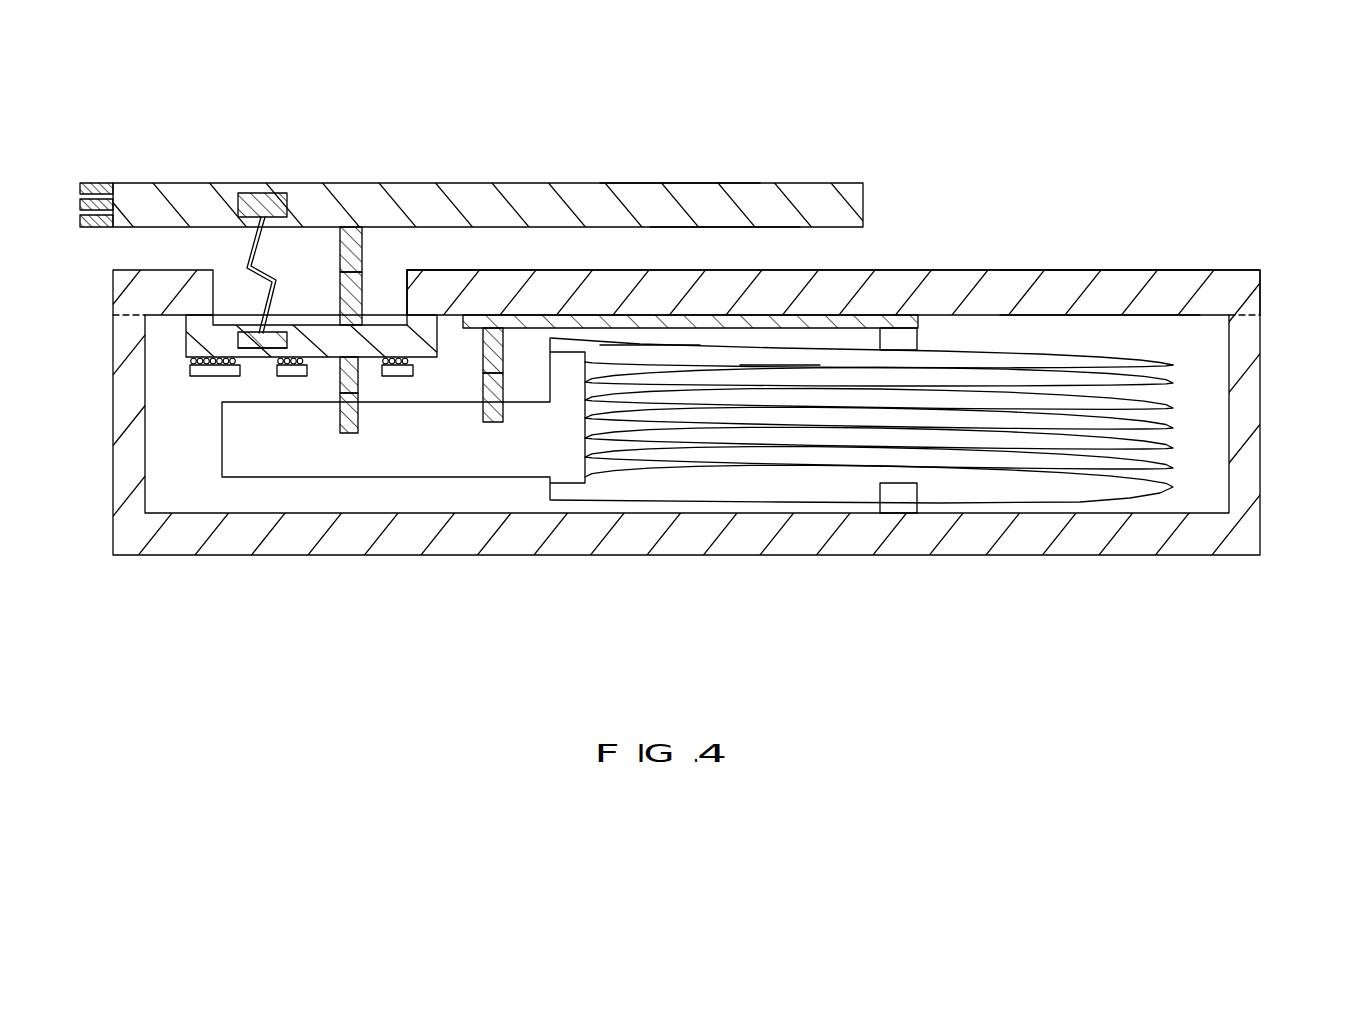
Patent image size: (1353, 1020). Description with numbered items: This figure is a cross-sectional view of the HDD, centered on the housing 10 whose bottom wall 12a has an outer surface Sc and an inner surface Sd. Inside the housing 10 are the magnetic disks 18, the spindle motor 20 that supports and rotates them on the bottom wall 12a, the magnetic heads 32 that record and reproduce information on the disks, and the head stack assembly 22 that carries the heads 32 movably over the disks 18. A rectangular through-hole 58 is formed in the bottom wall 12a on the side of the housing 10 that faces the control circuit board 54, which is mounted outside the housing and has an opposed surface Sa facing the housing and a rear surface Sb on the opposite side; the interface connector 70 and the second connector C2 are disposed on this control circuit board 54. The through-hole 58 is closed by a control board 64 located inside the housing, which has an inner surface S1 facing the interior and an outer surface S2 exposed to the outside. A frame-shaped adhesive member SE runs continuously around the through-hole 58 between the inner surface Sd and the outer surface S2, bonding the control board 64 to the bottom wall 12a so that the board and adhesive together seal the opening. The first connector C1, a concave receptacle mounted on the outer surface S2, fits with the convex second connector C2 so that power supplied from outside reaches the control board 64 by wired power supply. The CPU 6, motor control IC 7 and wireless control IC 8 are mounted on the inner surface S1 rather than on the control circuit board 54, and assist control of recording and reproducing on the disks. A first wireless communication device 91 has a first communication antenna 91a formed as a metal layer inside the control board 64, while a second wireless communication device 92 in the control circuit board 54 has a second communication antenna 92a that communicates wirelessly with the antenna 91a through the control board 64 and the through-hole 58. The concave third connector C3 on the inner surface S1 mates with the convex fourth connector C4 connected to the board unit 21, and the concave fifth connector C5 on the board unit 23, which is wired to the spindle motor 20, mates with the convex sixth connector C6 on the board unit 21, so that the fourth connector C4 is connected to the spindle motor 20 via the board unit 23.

The housing 10 is at (1276, 497).
The bottom wall 12a is at (1258, 292).
The magnetic disks 18 is at (1174, 384).
The spindle motor 20 is at (920, 335).
The board unit (first internal wiring member) 21 is at (222, 448).
The head stack assembly 22 is at (635, 354).
The board unit (second internal wiring member) 23 is at (823, 320).
The magnetic heads 32 is at (768, 370).
The control circuit board 54 is at (863, 203).
The through-hole 58 is at (410, 290).
The control board 64 is at (308, 325).
The interface connector 70 is at (94, 172).
The first wireless communication device 91 is at (270, 468).
The first communication antenna 91a is at (271, 350).
The second wireless communication device 92 is at (262, 172).
The second communication antenna 92a is at (262, 192).
The CPU 6 is at (205, 378).
The motor control IC 7 is at (399, 378).
The wireless control IC 8 is at (290, 378).
The first connector C1 is at (361, 290).
The second connector C2 is at (340, 247).
The third connector C3 is at (340, 378).
The fourth connector C4 is at (360, 415).
The fifth connector C5 is at (483, 350).
The sixth connector C6 is at (505, 410).
The inner surface S1 is at (258, 357).
The outer surface S2 is at (233, 322).
The adhesive member SE is at (187, 322).
The opposed surface Sa is at (725, 227).
The rear surface Sb is at (675, 183).
The outer surface Sc is at (1105, 270).
The inner surface Sd is at (1098, 316).